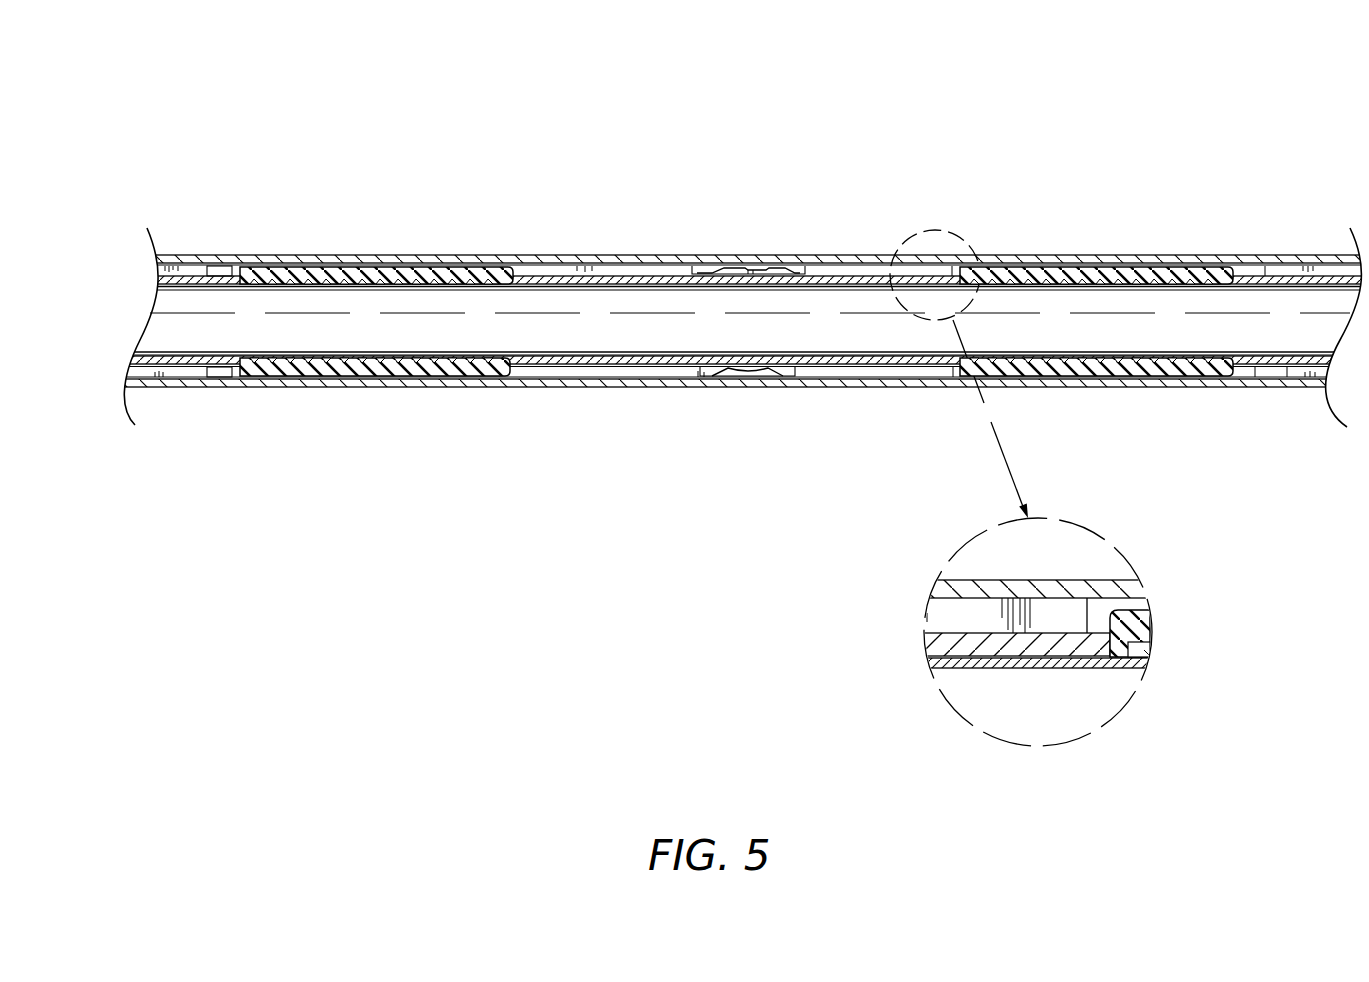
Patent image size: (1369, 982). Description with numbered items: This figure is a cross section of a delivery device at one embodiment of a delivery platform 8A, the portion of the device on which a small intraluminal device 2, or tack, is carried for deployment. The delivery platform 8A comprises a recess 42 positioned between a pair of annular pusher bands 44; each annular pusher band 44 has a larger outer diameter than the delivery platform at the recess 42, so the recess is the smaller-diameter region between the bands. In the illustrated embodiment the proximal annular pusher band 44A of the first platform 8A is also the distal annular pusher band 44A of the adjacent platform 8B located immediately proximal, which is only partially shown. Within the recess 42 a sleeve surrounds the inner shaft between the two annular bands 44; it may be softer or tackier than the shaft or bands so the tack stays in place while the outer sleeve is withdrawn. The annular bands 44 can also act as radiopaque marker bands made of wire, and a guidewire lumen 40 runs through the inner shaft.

The intraluminal device 2 is at (747, 273).
The delivery platform 8A is at (1055, 147).
The delivery platform 8B is at (1293, 222).
The guidewire lumen 40 is at (226, 364).
The recess 42 is at (768, 370).
The annular pusher band 44 is at (380, 255).
The proximal annular pusher band 44A is at (1127, 258).